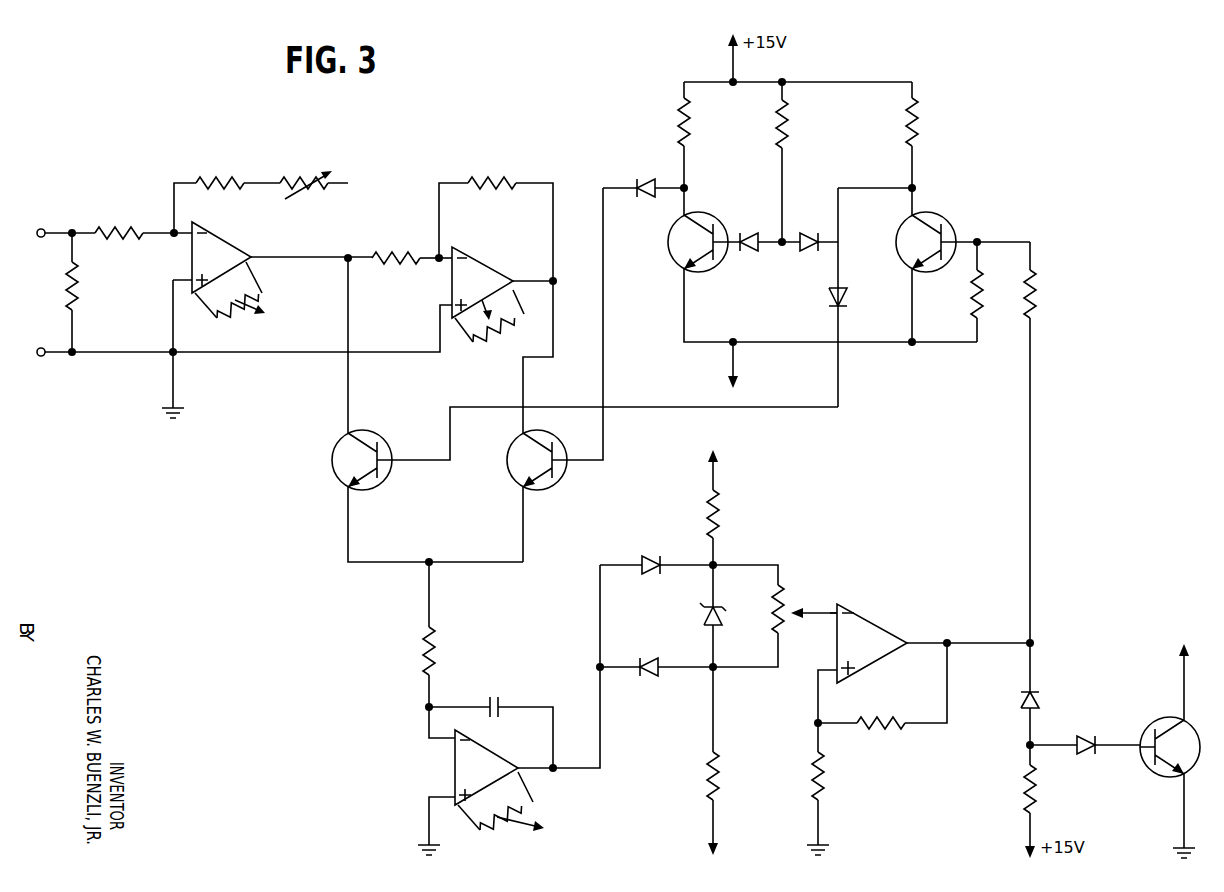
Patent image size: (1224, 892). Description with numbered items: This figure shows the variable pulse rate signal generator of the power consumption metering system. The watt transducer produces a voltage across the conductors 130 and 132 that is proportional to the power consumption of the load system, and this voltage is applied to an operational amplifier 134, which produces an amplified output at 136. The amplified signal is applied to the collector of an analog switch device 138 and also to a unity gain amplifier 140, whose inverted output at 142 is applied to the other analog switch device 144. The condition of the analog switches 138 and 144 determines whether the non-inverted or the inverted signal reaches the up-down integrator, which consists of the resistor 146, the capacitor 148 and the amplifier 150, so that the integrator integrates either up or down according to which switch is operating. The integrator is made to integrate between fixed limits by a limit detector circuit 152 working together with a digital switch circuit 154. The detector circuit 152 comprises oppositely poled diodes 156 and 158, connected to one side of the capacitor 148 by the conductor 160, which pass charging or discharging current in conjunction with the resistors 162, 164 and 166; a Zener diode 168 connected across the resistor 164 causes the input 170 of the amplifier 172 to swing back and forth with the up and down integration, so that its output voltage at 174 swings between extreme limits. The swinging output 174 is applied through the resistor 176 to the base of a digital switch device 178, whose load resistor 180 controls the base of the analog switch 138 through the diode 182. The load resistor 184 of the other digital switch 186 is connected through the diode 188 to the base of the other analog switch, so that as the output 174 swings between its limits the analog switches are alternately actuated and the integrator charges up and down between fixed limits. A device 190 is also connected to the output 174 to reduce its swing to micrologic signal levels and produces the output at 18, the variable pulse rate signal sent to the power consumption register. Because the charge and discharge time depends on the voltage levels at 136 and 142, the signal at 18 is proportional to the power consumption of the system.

The output 18 is at (1184, 669).
The conductor 130 is at (64, 232).
The conductor 132 is at (52, 352).
The operational amplifier 134 is at (223, 232).
The amplified output 136 is at (320, 262).
The analog switch device 138 is at (335, 478).
The unity gain amplifier 140 is at (487, 220).
The inverted output 142 is at (554, 308).
The analog switch device 144 is at (512, 442).
The resistor 146 is at (436, 667).
The capacitor 148 is at (500, 704).
The amplifier 150 is at (488, 752).
The limit detector circuit 152 is at (806, 545).
The digital switch circuit 154 is at (930, 163).
The diode 156 is at (648, 556).
The diode 158 is at (650, 658).
The conductor 160 is at (588, 766).
The resistor 162 is at (720, 518).
The resistor 164 is at (787, 600).
The resistor 166 is at (720, 785).
The Zener diode 168 is at (723, 612).
The input 170 is at (821, 611).
The amplifier 172 is at (868, 618).
The output 174 is at (991, 642).
The resistor 176 is at (1040, 300).
The digital switch device 178 is at (956, 232).
The load resistor 180 is at (916, 130).
The diode 182 is at (841, 292).
The load resistor 184 is at (678, 119).
The digital switch 186 is at (729, 229).
The diode 188 is at (645, 199).
The device 190 is at (1150, 771).